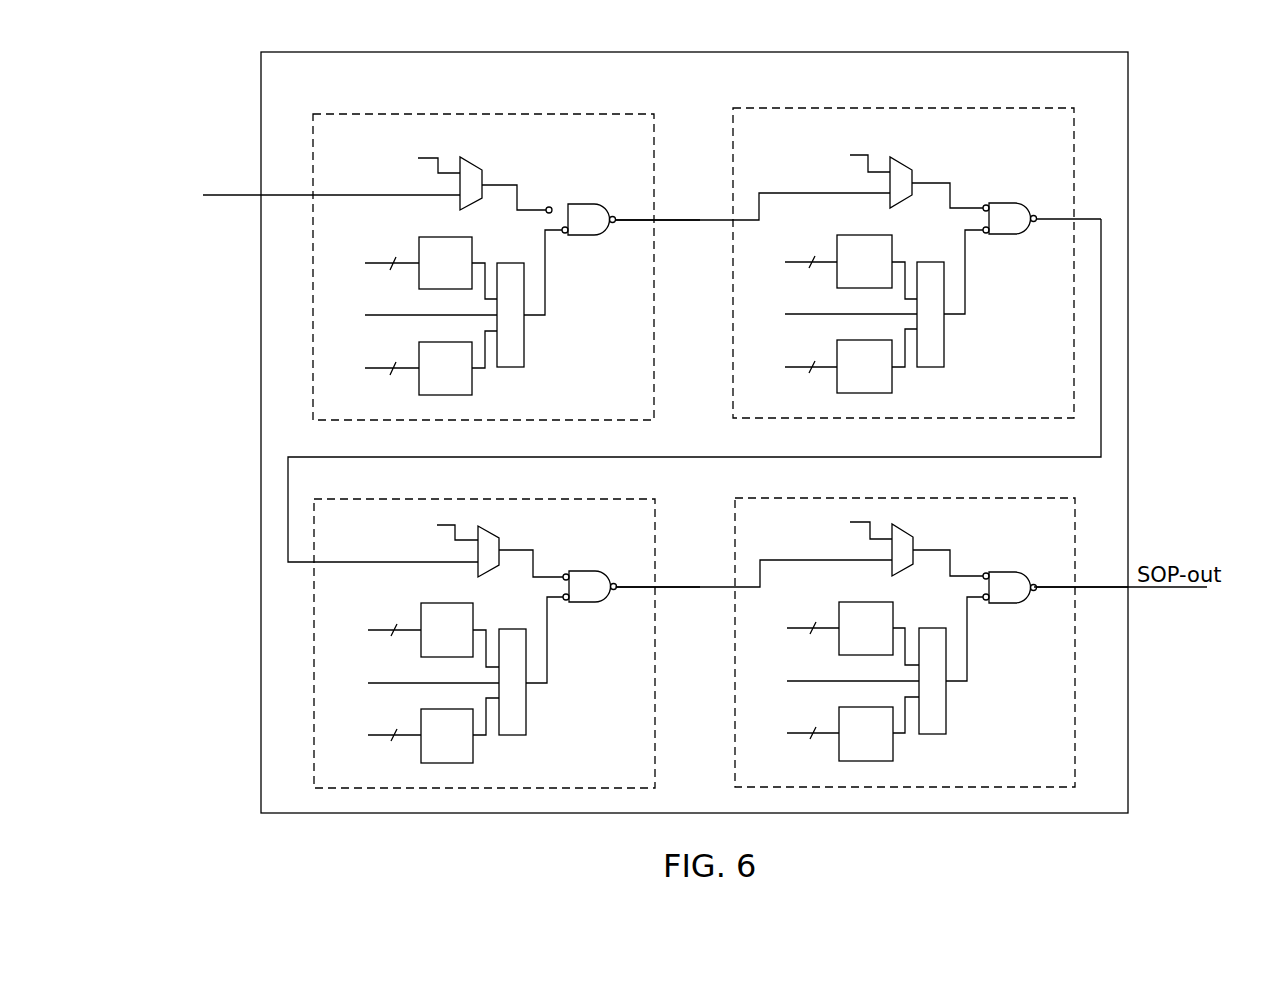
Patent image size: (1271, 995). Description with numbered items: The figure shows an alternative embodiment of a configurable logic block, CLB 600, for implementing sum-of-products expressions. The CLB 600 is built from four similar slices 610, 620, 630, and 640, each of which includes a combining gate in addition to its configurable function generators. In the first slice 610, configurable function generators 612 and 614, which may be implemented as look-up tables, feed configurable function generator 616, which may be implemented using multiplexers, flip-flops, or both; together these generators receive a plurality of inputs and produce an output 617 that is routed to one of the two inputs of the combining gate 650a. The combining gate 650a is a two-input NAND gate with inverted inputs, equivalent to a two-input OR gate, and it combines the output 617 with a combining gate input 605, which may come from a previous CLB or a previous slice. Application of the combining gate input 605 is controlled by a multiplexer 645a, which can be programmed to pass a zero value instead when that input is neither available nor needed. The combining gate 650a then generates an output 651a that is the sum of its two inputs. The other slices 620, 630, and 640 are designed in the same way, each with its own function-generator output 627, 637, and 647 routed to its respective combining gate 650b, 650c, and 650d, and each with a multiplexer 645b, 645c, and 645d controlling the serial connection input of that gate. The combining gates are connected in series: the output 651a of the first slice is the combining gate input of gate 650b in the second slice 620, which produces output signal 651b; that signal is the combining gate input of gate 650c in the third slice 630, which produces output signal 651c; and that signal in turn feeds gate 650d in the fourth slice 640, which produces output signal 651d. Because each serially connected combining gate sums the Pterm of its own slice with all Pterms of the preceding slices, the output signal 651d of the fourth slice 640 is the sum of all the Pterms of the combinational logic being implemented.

The CLB 600 is at (738, 52).
The combining gate input 605 is at (235, 195).
The slice 610 is at (483, 113).
The configurable function generator 612 is at (430, 275).
The configurable function generator 614 is at (430, 380).
The configurable function generator 616 is at (524, 353).
The output 617 is at (538, 315).
The slice 620 is at (902, 108).
The output 627 is at (955, 314).
The slice 630 is at (342, 499).
The output 637 is at (535, 683).
The slice 640 is at (788, 498).
The output 647 is at (955, 681).
The multiplexer 645a is at (479, 162).
The multiplexer 645b is at (900, 160).
The multiplexer 645c is at (490, 533).
The multiplexer 645d is at (902, 530).
The combining gate 650a is at (597, 204).
The combining gate 650b is at (1010, 203).
The combining gate 650c is at (592, 571).
The combining gate 650d is at (1003, 572).
The output 651a is at (645, 220).
The output signal 651b is at (1067, 219).
The output signal 651c is at (642, 587).
The output signal 651d is at (1065, 587).